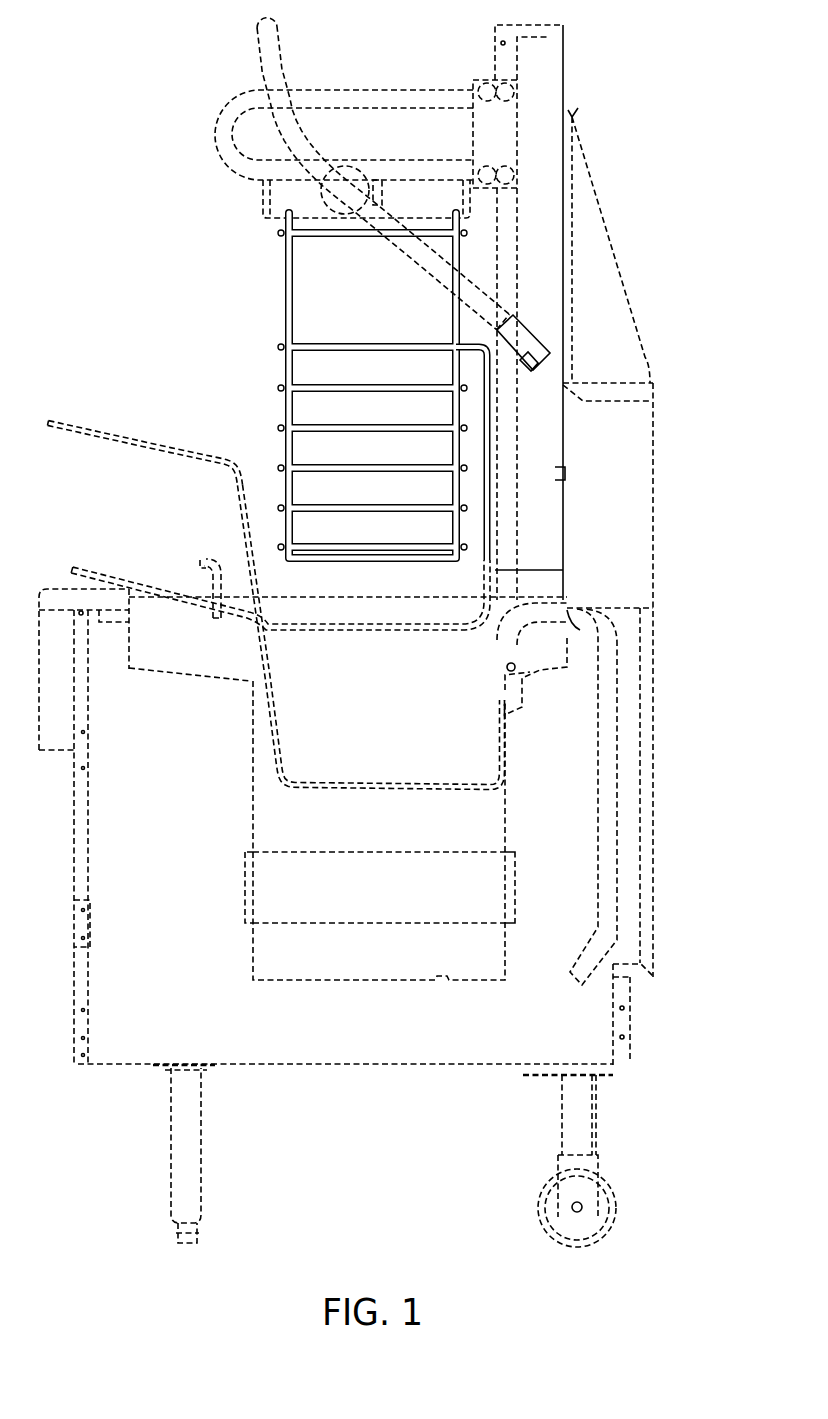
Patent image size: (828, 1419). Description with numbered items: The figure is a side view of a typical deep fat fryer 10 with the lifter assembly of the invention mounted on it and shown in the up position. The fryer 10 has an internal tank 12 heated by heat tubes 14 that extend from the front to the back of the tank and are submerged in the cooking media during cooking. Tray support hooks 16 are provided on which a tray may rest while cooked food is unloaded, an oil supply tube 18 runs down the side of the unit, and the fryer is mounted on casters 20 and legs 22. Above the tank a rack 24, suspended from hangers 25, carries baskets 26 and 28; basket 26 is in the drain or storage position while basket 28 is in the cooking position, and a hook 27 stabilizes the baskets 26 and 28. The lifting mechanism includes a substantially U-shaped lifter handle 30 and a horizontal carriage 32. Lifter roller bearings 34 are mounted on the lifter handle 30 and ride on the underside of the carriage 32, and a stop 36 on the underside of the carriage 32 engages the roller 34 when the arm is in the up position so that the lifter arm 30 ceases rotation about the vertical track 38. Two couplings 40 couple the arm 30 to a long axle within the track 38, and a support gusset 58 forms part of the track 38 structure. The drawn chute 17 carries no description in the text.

The deep fat fryer 10 is at (655, 723).
The internal tank 12 is at (507, 800).
The heat tubes 14 is at (515, 850).
The tray support hooks 16 is at (200, 560).
The chute 17 is at (529, 442).
The oil supply tube 18 is at (610, 808).
The casters 20 is at (613, 1185).
The legs 22 is at (202, 1142).
The rack 24 is at (285, 297).
The hangers 25 is at (262, 200).
The basket 26 is at (157, 445).
The hook 27 is at (512, 666).
The basket 28 is at (120, 588).
The lifter handle 30 is at (277, 62).
The horizontal carriage 32 is at (377, 90).
The lifter roller bearings 34 is at (353, 178).
The stop 36 is at (380, 185).
The vertical track 38 is at (552, 222).
The couplings 40 is at (537, 348).
The support gusset 58 is at (626, 270).